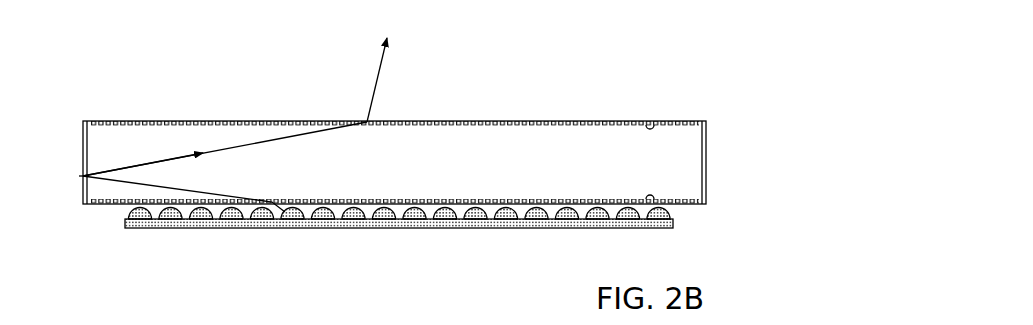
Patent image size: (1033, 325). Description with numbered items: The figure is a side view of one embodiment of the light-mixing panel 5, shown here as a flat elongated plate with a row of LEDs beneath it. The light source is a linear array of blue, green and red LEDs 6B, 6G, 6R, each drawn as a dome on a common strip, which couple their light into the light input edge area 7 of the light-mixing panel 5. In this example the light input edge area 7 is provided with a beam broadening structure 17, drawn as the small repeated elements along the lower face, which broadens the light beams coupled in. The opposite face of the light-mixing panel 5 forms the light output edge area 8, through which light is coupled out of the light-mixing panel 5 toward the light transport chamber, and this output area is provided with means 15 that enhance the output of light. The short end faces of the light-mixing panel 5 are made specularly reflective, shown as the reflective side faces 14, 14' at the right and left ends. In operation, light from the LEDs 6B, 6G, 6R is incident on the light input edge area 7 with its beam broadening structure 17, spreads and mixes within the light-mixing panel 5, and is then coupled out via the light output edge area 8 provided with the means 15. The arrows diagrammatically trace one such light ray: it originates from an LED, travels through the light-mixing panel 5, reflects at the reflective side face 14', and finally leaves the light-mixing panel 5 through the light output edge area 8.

The light-mixing panel 5 is at (78, 120).
The blue LED 6B is at (140, 228).
The green LED 6G is at (171, 228).
The red LED 6R is at (201, 228).
The light input edge area 7 is at (596, 216).
The light output edge area 8 is at (651, 120).
The reflective side face 14 is at (715, 139).
The reflective side face 14' is at (60, 162).
The means for enhancing light output 15 is at (594, 119).
The beam broadening structure 17 is at (654, 226).